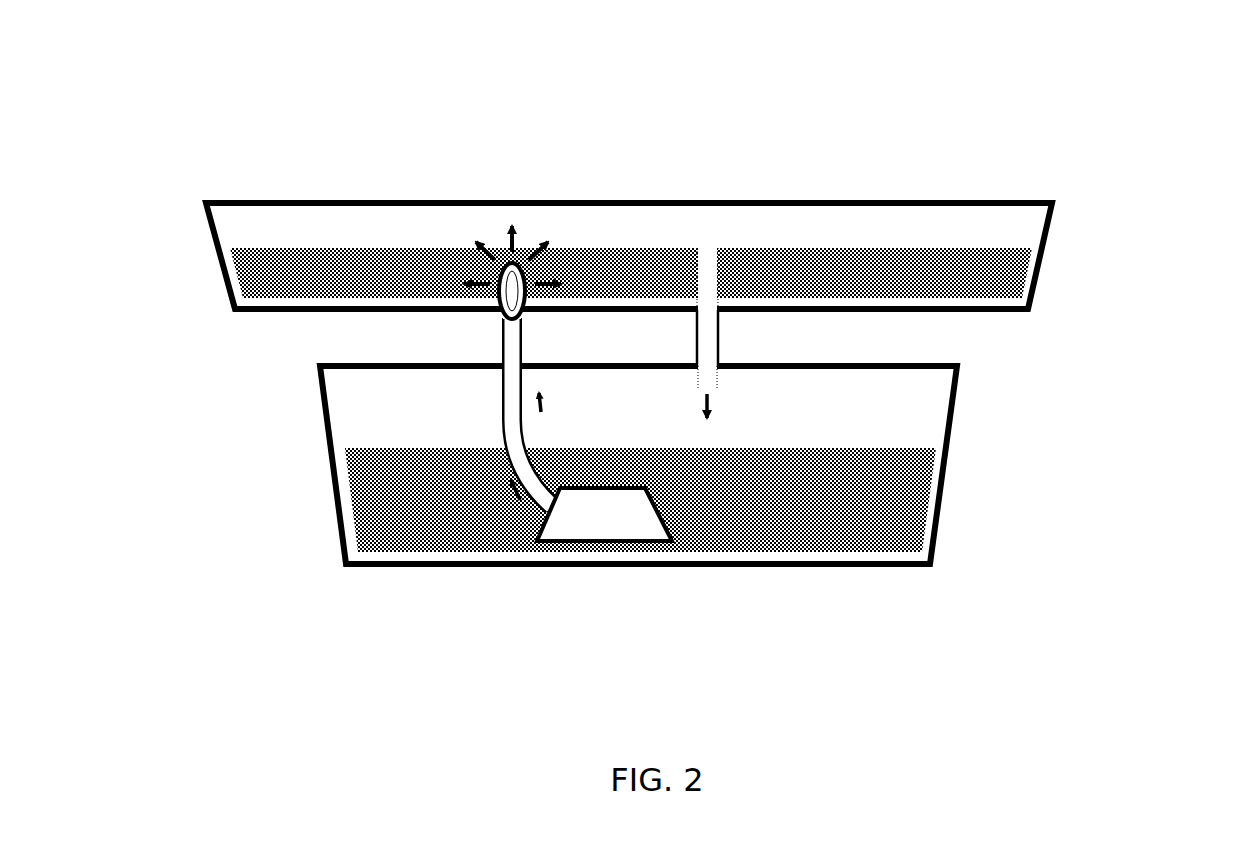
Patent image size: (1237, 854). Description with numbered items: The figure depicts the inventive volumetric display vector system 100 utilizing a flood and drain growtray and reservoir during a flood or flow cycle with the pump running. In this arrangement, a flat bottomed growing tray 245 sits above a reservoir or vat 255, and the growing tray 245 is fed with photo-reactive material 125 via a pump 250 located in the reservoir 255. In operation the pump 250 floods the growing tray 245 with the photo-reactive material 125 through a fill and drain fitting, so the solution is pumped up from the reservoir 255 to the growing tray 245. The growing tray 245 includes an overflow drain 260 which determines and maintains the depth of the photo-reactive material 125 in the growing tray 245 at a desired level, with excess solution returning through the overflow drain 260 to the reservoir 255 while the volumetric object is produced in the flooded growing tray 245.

The hydroponic flood and drain system 100 is at (650, 38).
The photo-reactive material 125 is at (878, 494).
The growing tray 245 is at (188, 227).
The pump 250 is at (600, 510).
The reservoir 255 is at (328, 511).
The overflow drain 260 is at (768, 236).